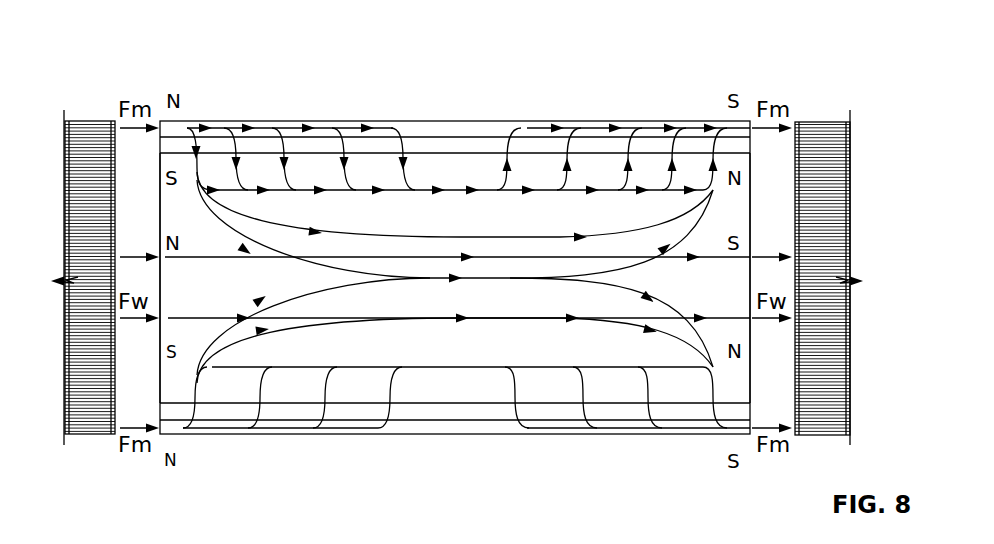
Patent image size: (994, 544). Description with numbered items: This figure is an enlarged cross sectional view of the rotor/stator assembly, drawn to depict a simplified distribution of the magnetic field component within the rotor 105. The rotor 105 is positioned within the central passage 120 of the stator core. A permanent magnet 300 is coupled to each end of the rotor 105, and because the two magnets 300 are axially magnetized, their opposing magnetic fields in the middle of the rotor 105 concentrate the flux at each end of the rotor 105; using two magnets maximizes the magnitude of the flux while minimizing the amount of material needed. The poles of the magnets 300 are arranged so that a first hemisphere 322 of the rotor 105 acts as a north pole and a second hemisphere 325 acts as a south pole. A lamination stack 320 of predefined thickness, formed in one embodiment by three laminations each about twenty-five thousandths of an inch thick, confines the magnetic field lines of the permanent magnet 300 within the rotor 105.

The rotor 105 is at (114, 52).
The central passage 120 is at (843, 249).
The permanent magnet 300 is at (475, 147).
The lamination stack 320 is at (415, 130).
The first hemisphere 322 is at (218, 285).
The second hemisphere 325 is at (745, 285).